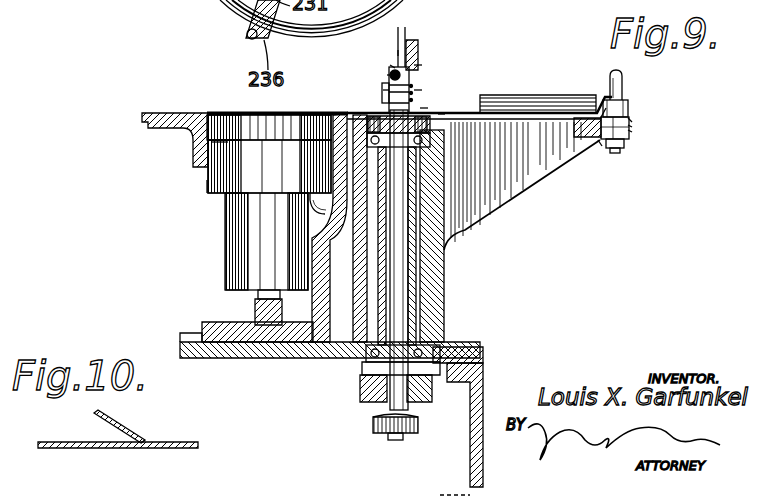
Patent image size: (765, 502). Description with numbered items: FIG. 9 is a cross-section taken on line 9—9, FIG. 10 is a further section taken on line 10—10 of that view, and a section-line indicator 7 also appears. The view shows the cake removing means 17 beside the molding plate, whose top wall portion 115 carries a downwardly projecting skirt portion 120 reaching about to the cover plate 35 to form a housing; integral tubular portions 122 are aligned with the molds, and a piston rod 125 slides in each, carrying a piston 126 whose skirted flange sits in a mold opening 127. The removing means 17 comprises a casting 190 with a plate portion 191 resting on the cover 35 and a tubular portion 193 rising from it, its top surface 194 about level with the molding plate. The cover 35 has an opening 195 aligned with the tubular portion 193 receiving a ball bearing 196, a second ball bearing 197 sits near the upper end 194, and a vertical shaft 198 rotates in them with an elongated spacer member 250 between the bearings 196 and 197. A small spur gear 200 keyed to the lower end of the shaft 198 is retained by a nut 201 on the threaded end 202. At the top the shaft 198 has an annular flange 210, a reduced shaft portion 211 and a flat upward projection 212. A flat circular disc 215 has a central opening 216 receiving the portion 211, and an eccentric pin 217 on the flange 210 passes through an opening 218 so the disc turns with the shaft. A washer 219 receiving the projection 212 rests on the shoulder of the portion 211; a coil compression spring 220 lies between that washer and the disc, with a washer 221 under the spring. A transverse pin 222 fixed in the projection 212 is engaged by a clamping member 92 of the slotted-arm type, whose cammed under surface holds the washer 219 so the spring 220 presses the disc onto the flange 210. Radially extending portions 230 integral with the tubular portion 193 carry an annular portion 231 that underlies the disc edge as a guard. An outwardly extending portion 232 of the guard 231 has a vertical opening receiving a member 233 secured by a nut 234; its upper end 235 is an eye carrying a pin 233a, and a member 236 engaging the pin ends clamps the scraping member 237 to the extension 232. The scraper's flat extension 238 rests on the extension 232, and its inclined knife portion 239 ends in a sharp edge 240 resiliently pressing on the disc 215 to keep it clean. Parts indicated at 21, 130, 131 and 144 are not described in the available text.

In FIG. 9, the section line 7 is at (163, 0).
In FIG. 9, the section line 9— 9 is at (185, 22).
In FIG. 9, the section line 10— 10 is at (555, 63).
In FIG. 9, the cake removing means 17 is at (530, 208).
In FIG. 9, the frame wall 21 is at (484, 412).
In FIG. 9, the cover plate 35 is at (483, 350).
In FIG. 9, the member 92 is at (399, 50).
In FIG. 9, the top wall portion 115 is at (158, 113).
In FIG. 9, the skirt portion 120 is at (333, 147).
In FIG. 9, the tubular portions 122 is at (233, 253).
In FIG. 9, the piston rod 125 is at (258, 293).
In FIG. 9, the piston 126 is at (233, 128).
In FIG. 9, the mold openings 127 is at (264, 122).
In FIG. 9, the base block 130 is at (288, 347).
In FIG. 9, the base plate 131 is at (248, 347).
In FIG. 9, the housing rim 144 is at (207, 186).
In FIG. 9, the casting 190 is at (548, 192).
In FIG. 9, the plate portion 191 is at (479, 345).
In FIG. 9, the tubular portion 193 is at (444, 267).
In FIG. 9, the top surface 194 is at (440, 113).
In FIG. 9, the opening 195 is at (368, 358).
In FIG. 9, the ball bearing 196 is at (380, 370).
In FIG. 9, the second ball bearing 197 is at (447, 117).
In FIG. 9, the vertical rotatable shaft 198 is at (400, 300).
In FIG. 9, the small spur gear 200 is at (428, 390).
In FIG. 9, the nut 201 is at (385, 434).
In FIG. 9, the lower screw-threaded end 202 is at (400, 440).
In FIG. 9, the annular flange 210 is at (382, 99).
In FIG. 9, the reduced shaft portion 211 is at (389, 95).
In FIG. 9, the flat upward projection 212 is at (396, 62).
In FIG. 9, the flat circular disc 215 is at (296, 112).
In FIG. 10, the flat circular disc 215 is at (118, 448).
In FIG. 9, the central opening 216 is at (385, 90).
In FIG. 9, the eccentric pin 217 is at (420, 83).
In FIG. 9, the opening 218 is at (424, 103).
In FIG. 9, the washer 219 is at (394, 70).
In FIG. 9, the coil compression spring 220 is at (389, 78).
In FIG. 9, the washer 221 is at (423, 63).
In FIG. 9, the transverse pin 222 is at (420, 33).
In FIG. 9, the radially extending portions 230 is at (558, 158).
In FIG. 9, the annular portion 231 is at (592, 146).
In FIG. 9, the outwardly extending portion 232 is at (630, 126).
In FIG. 9, the member 233 is at (630, 118).
In FIG. 9, the pin 233a is at (630, 112).
In FIG. 9, the nut 234 is at (626, 148).
In FIG. 9, the upper end 235 is at (610, 90).
In FIG. 9, the member 236 is at (622, 100).
In FIG. 9, the scraping member 237 is at (545, 95).
In FIG. 10, the scraping member 237 is at (142, 430).
In FIG. 9, the flat extension 238 is at (630, 123).
In FIG. 9, the knife portion 239 is at (500, 108).
In FIG. 10, the knife portion 239 is at (94, 414).
In FIG. 10, the sharp edge portion 240 is at (148, 441).
In FIG. 9, the elongated spacer member 250 is at (366, 268).